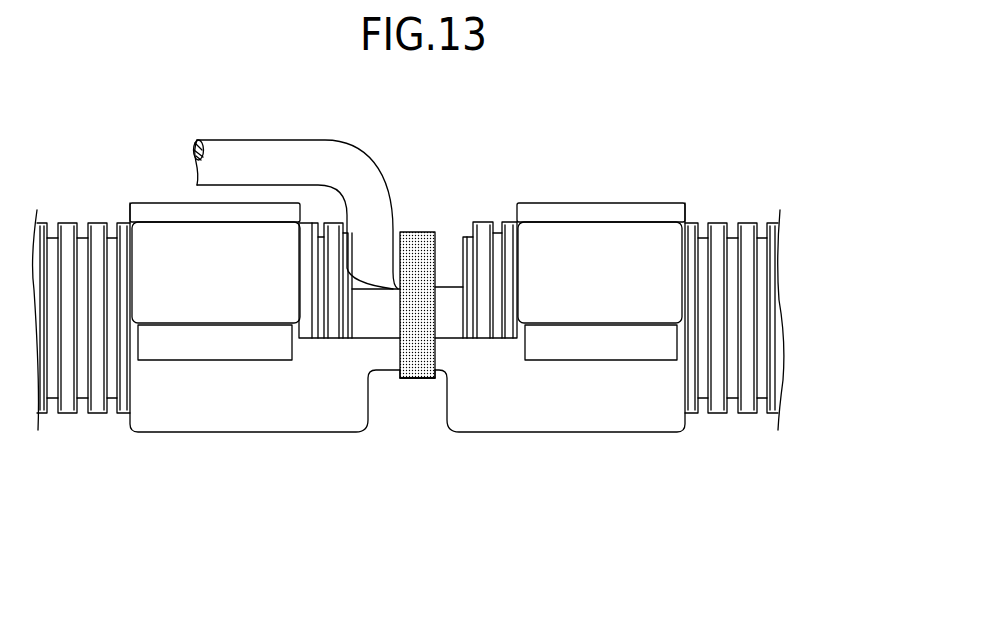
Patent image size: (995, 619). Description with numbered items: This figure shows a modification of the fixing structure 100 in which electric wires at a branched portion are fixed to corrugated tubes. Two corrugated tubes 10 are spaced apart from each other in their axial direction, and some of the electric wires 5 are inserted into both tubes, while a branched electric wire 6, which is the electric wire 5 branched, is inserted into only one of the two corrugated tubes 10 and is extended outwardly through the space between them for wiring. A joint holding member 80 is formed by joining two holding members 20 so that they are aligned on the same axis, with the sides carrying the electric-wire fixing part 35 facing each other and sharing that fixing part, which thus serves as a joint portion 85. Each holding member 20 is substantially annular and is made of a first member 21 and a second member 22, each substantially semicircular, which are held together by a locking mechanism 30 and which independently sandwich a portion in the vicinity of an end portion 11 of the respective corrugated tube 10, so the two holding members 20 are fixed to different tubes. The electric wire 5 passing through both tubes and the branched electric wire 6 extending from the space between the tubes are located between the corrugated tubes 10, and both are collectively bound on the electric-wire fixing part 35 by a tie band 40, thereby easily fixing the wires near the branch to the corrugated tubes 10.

The electric wire 5 is at (370, 318).
The branched electric wire 6 is at (288, 138).
The corrugated tube 10 is at (72, 222).
The end portion 11 is at (365, 273).
The holding member 20 is at (170, 433).
The first member 21 is at (150, 202).
The second member 22 is at (238, 433).
The locking mechanism 30 is at (237, 250).
The electric-wire fixing part 35 is at (388, 376).
The tie band 40 is at (415, 378).
The joint holding member 80 is at (503, 462).
The joint portion 85 is at (394, 441).
The fixing structure 100 is at (421, 158).